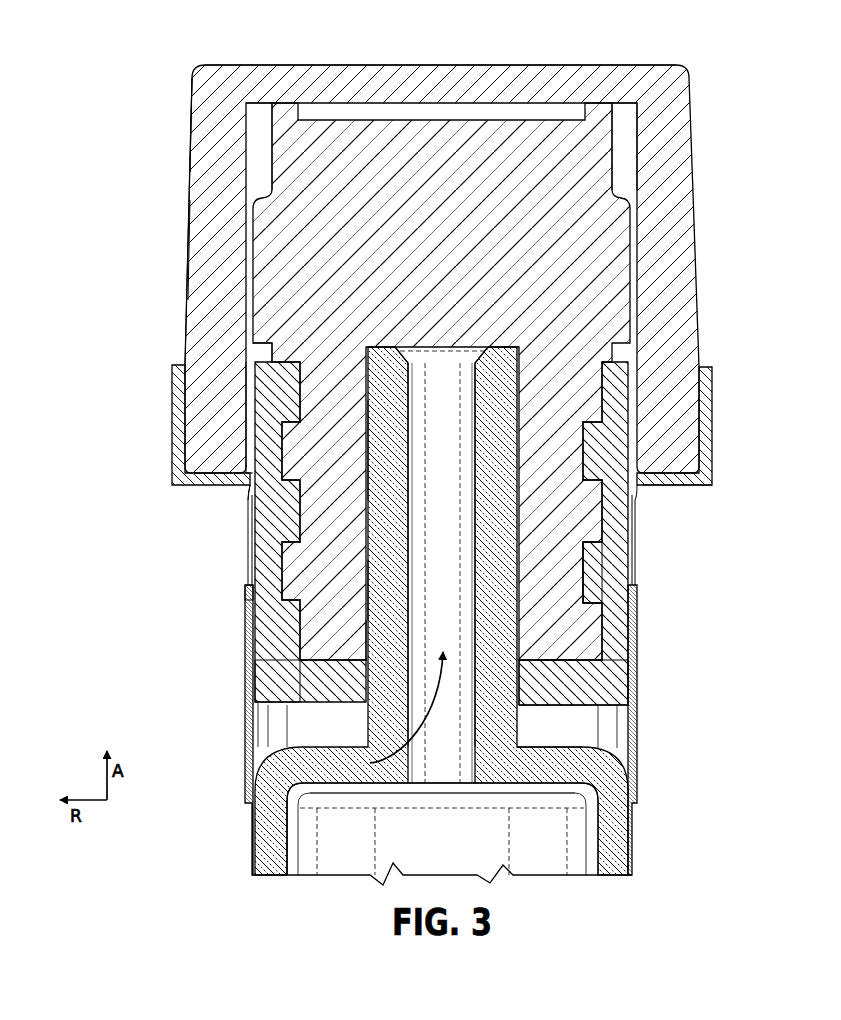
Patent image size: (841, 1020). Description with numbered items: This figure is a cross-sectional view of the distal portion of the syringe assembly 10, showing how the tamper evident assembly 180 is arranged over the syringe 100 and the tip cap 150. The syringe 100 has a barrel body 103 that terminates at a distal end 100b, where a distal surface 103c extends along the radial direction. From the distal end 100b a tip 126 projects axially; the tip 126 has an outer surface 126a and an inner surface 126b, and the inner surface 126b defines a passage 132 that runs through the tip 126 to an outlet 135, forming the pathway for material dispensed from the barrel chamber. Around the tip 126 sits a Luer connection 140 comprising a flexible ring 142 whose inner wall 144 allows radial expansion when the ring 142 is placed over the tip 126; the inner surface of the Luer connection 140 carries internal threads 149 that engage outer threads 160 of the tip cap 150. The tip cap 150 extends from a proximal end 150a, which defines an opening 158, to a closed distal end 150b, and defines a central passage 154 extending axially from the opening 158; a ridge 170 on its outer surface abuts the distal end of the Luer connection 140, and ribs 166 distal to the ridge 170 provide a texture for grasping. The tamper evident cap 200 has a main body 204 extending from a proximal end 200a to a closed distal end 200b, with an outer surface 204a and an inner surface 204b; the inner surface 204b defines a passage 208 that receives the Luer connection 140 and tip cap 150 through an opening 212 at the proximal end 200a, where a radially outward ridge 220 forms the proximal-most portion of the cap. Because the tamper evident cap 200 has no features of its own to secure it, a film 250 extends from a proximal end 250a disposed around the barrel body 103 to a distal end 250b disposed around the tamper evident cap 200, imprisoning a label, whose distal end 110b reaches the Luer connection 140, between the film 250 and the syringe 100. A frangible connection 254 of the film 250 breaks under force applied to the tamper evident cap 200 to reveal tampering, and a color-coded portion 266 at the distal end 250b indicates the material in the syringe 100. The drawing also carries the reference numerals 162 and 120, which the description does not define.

The syringe assembly 10 is at (121, 90).
The tamper evident cap 200 is at (690, 90).
The proximal end 200a is at (686, 486).
The distal end 200b is at (668, 70).
The main body 204 is at (188, 212).
The outer surface 204a is at (193, 172).
The inner surface 204b is at (620, 168).
The passage 208 is at (627, 137).
The tip cap 150 is at (620, 322).
The proximal end 150a is at (313, 647).
The distal end 150b is at (260, 133).
The ribs 166 is at (250, 274).
The tamper evident assembly 180 is at (183, 292).
The ridge 170 is at (273, 350).
The distal end 250b is at (184, 384).
The ridge 220 is at (708, 468).
The gap 162 is at (248, 428).
The color-coded portion 266 is at (243, 473).
The opening 212 is at (256, 494).
The Luer connection 140 is at (258, 537).
The ring 142 is at (257, 607).
The frangible connection 254 is at (642, 515).
The outer threads 160 is at (605, 538).
The internal threads 149 is at (587, 572).
The distal end 110b is at (638, 641).
The inner wall 144 is at (570, 680).
The proximal end 250a is at (242, 688).
The central passage 154 is at (492, 472).
The passage 132 is at (436, 369).
The outlet 135 is at (495, 368).
The tip 126 is at (397, 720).
The outer surface 126a is at (368, 588).
The inner surface 126b is at (398, 463).
The body bore 120 is at (368, 642).
The opening 158 is at (386, 713).
The distal surface 103c is at (596, 748).
The film 250 is at (631, 758).
The syringe 100 is at (612, 845).
The distal end 100b is at (616, 790).
The barrel body 103 is at (283, 838).